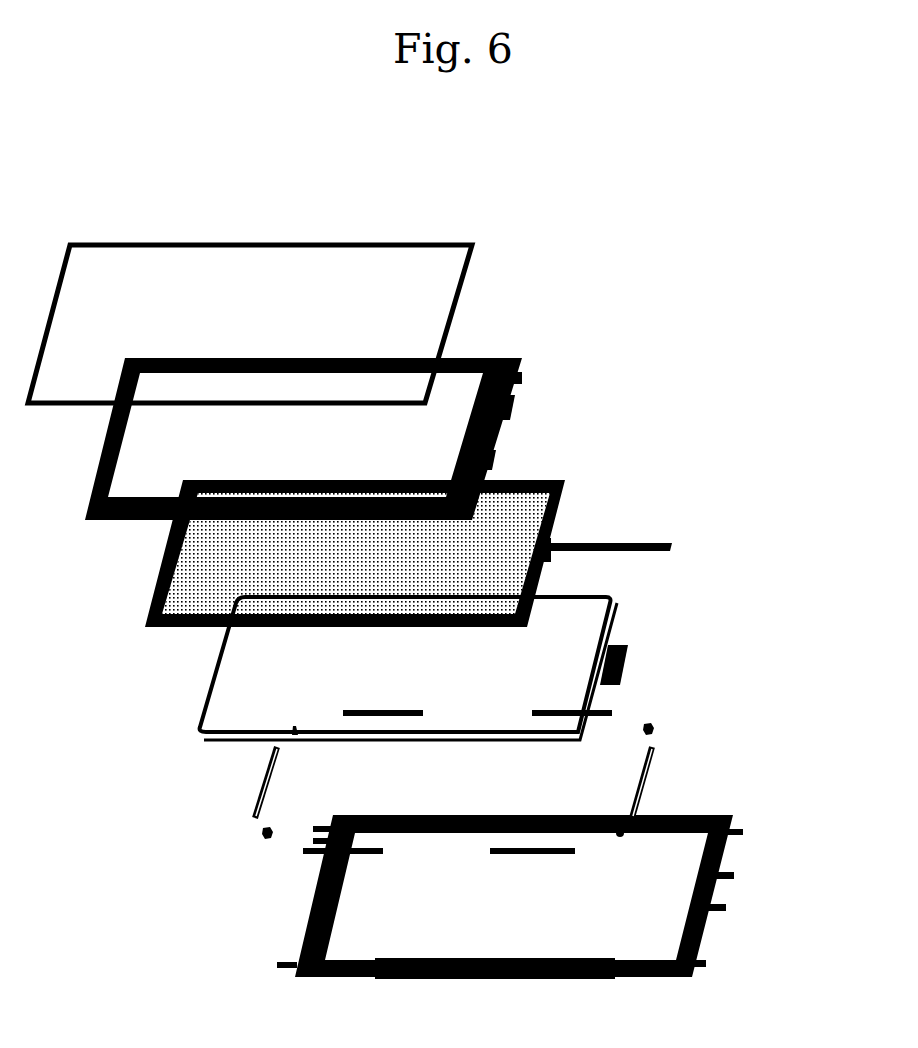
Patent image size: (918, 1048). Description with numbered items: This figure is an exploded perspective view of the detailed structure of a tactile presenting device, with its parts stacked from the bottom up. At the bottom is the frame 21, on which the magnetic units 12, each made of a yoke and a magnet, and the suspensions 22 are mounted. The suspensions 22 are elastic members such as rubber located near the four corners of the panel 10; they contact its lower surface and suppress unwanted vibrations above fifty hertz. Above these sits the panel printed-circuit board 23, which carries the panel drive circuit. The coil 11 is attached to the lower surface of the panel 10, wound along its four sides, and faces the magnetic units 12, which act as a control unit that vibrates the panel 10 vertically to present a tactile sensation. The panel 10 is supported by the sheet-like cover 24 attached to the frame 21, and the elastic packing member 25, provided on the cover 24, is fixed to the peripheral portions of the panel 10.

The panel 10 is at (562, 510).
The coil 11 is at (615, 618).
The magnetic units 12 is at (647, 790).
The frame 21 is at (713, 853).
The suspensions 22 is at (658, 728).
The panel printed-circuit board 23 is at (625, 665).
The cover 24 is at (517, 402).
The packing member 25 is at (463, 300).